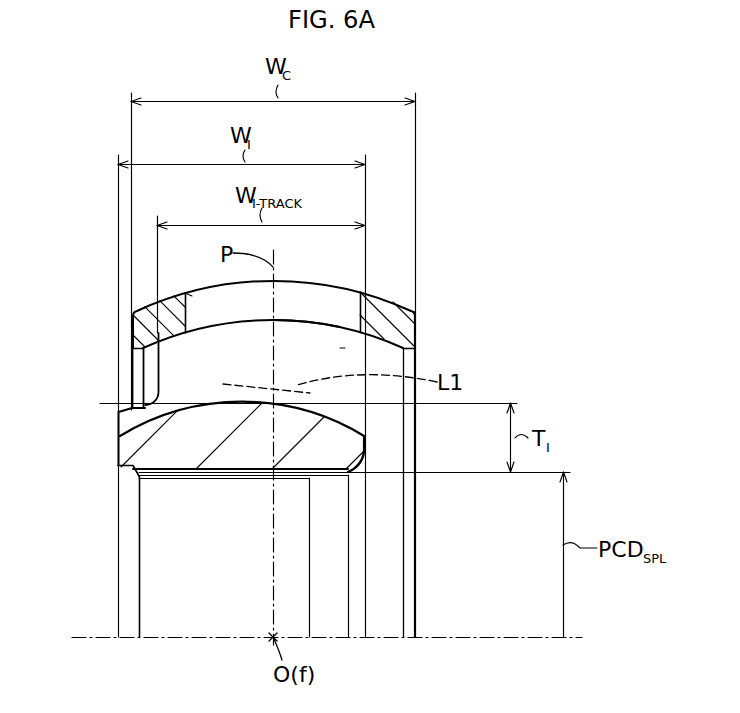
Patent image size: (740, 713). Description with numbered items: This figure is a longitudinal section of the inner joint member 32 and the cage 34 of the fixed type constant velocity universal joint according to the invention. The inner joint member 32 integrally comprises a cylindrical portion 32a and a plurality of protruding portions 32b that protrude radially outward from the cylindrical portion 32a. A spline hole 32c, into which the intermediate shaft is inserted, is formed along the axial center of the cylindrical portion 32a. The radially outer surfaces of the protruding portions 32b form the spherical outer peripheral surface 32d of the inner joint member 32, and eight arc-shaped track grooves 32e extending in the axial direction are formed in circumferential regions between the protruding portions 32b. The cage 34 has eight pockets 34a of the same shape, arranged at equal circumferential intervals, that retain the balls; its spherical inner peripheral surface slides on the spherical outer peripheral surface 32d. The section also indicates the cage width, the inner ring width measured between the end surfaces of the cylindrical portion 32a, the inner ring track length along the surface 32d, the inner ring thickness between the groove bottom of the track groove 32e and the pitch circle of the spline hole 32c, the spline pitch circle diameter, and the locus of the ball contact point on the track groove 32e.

The inner joint member 32 is at (118, 450).
The cylindrical portion 32a is at (242, 448).
The protruding portions 32b is at (340, 347).
The spline hole 32c is at (175, 478).
The spherical outer peripheral surface 32d is at (310, 320).
The track grooves 32e is at (130, 408).
The cage 34 is at (393, 297).
The pockets 34a is at (192, 296).